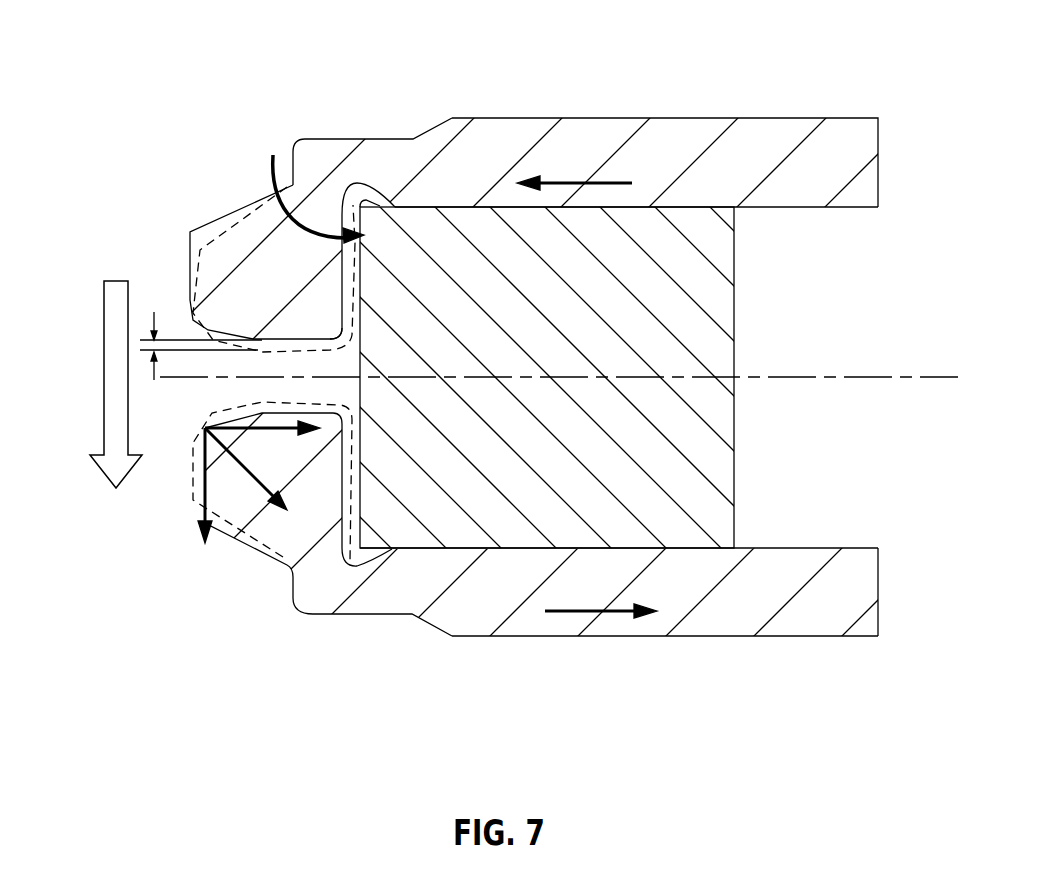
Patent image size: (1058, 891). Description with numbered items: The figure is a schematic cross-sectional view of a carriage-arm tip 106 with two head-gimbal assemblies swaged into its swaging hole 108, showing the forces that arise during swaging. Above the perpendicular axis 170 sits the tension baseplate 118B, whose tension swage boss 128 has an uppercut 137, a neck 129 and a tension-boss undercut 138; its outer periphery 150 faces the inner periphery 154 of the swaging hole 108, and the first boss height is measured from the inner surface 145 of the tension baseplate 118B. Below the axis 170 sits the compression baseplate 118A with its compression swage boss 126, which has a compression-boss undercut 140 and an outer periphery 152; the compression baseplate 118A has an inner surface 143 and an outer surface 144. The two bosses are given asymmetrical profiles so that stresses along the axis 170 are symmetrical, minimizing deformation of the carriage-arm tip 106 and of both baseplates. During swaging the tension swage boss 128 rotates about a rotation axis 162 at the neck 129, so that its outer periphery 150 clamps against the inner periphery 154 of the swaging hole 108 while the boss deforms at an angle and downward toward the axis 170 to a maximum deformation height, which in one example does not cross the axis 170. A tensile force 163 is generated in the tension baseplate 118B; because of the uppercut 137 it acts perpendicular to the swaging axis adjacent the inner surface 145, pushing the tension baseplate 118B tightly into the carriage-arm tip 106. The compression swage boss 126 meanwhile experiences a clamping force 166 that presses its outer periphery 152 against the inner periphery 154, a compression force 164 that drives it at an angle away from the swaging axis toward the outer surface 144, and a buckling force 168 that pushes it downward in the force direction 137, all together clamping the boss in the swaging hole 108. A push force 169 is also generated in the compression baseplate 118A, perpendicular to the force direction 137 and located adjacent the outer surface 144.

The carriage-arm tip 106 is at (700, 448).
The swaging hole 108 is at (127, 220).
The compression baseplate 118A is at (740, 612).
The tension baseplate 118B is at (658, 140).
The compression swage boss 126 is at (277, 535).
The tension swage boss 128 is at (260, 238).
The neck 129 is at (328, 160).
The uppercut 137 is at (110, 310).
The tension-boss undercut 138 is at (363, 197).
The compression-boss undercut 140 is at (360, 548).
The inner surface of the compression baseplate 143 is at (773, 547).
The outer surface of the compression baseplate 144 is at (826, 636).
The inner surface of the tension baseplate 145 is at (757, 208).
The outer periphery of the tension swage boss 150 is at (332, 285).
The outer periphery of the compression swage boss 152 is at (353, 475).
The inner periphery of the swaging hole 154 is at (355, 352).
The rotation axis 162 is at (272, 155).
The tensile force 163 is at (570, 183).
The compression force 164 is at (205, 432).
The clamping force 166 is at (265, 420).
The buckling force 168 is at (192, 488).
The push force 169 is at (567, 612).
The axis 170 is at (785, 376).